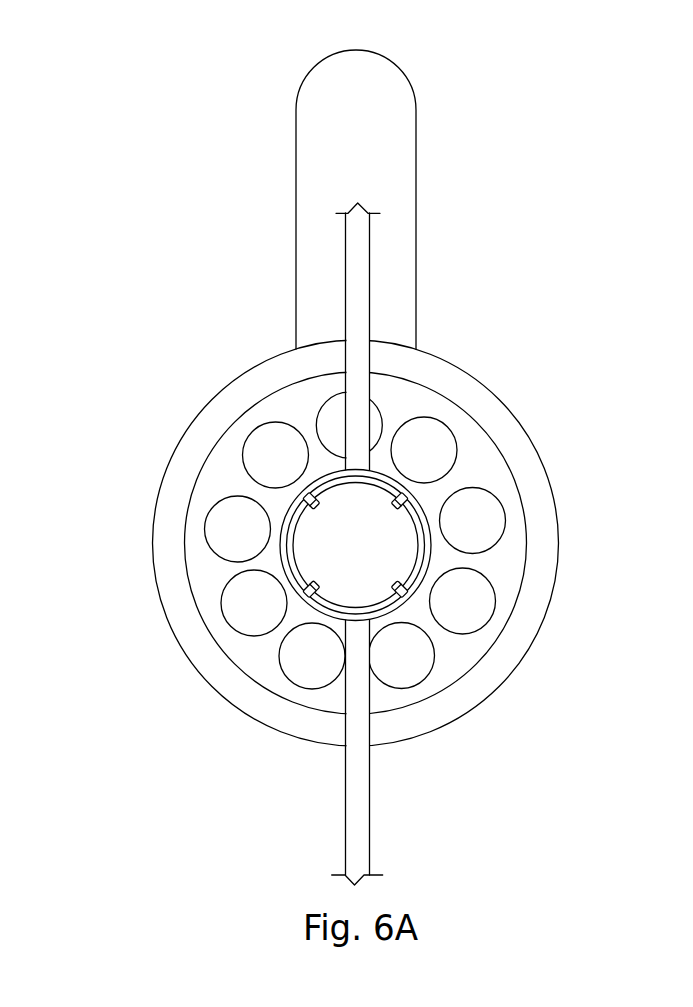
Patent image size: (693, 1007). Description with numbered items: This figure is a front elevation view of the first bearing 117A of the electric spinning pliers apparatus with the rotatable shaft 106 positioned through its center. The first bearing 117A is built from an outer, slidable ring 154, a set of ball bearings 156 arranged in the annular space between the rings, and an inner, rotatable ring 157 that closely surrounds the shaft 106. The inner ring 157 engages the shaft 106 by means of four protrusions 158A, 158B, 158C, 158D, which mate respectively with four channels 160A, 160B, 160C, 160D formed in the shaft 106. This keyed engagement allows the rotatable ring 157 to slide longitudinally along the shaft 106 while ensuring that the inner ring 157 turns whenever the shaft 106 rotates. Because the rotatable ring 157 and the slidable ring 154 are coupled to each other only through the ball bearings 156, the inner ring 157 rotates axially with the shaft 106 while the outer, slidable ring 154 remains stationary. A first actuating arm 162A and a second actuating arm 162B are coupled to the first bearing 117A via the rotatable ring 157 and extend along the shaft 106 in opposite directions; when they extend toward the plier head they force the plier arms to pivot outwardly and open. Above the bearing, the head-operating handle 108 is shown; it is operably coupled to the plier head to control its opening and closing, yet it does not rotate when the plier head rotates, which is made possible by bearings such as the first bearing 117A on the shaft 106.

The head-operating handle 108 is at (388, 195).
The first actuating arm 162A is at (352, 315).
The second actuating arm 162B is at (353, 823).
The outer, slidable ring 154 is at (422, 360).
The first bearing 117A is at (278, 363).
The ball bearings 156 is at (242, 602).
The inner, rotatable ring 157 is at (375, 613).
The rotatable shaft 106 is at (413, 538).
The protrusion 158A is at (305, 497).
The protrusion 158B is at (303, 588).
The protrusion 158C is at (402, 583).
The protrusion 158D is at (402, 498).
The channel 160A is at (307, 504).
The channel 160B is at (304, 582).
The channel 160C is at (404, 586).
The channel 160D is at (406, 500).